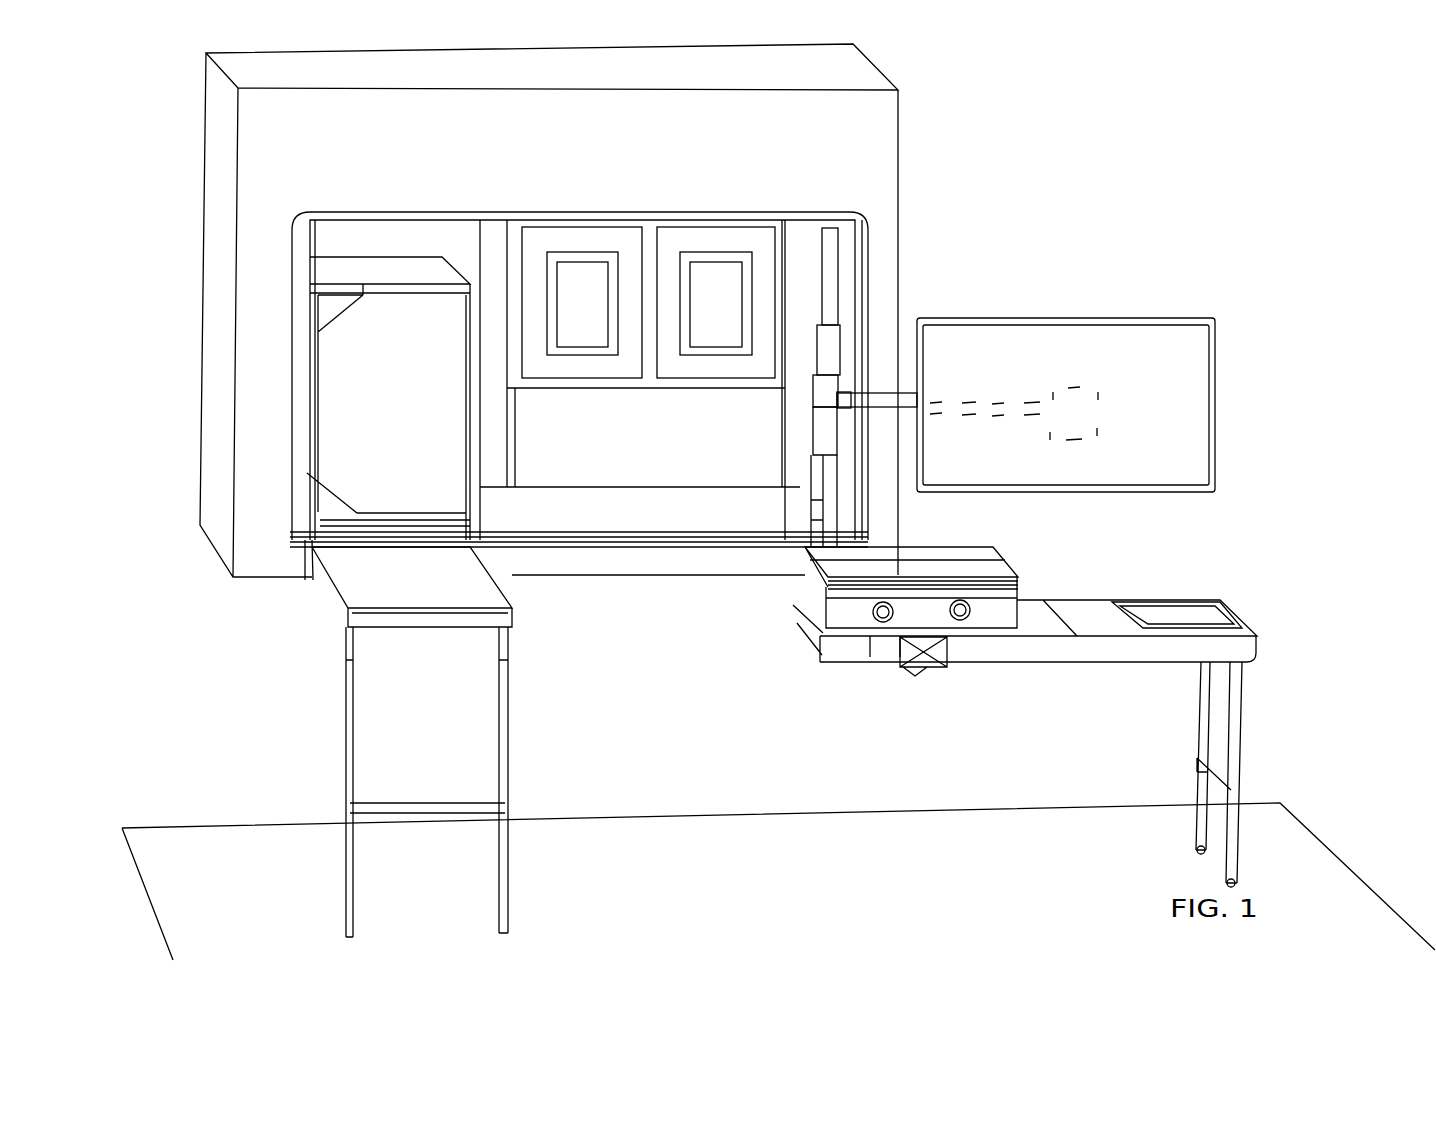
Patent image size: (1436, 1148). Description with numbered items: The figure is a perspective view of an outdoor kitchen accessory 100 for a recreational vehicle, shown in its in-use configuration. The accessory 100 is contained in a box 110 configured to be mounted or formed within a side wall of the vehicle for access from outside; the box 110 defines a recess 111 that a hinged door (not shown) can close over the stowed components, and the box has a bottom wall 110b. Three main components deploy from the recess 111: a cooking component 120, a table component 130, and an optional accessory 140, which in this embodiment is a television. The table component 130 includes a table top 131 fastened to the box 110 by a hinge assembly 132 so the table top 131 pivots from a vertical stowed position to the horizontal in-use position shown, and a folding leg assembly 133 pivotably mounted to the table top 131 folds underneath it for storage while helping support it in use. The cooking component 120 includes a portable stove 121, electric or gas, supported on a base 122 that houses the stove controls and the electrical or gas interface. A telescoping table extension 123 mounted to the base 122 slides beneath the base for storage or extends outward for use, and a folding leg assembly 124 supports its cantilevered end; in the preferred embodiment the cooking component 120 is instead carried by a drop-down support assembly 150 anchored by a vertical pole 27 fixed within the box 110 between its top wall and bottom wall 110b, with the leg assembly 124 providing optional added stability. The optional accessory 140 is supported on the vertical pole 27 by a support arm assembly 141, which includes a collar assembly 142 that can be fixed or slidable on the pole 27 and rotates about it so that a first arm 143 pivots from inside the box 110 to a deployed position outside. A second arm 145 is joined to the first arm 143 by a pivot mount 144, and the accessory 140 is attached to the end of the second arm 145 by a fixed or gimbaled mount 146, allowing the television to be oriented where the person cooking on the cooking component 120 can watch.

The outdoor kitchen accessory 100 is at (658, 546).
The box 110 is at (900, 172).
The bottom wall 110b is at (585, 452).
The recess 111 is at (353, 256).
The vertical pole 27 is at (845, 258).
The collar assembly 142 is at (840, 333).
The first arm 143 is at (838, 372).
The pivot mount 144 is at (840, 409).
The drop-down support assembly 150 is at (814, 432).
The support arm assembly 141 is at (880, 407).
The second arm 145 is at (990, 400).
The fixed or gimbaled mount 146 is at (1082, 395).
The optional accessory 140 is at (1222, 343).
The cooking component 120 is at (1086, 594).
The portable stove 121 is at (1010, 576).
The base 122 is at (940, 692).
The telescoping table extension 123 is at (1237, 615).
The folding leg assembly 124 is at (1240, 713).
The table component 130 is at (340, 620).
The table top 131 is at (505, 600).
The hinge assembly 132 is at (310, 545).
The folding leg assembly 133 is at (513, 690).